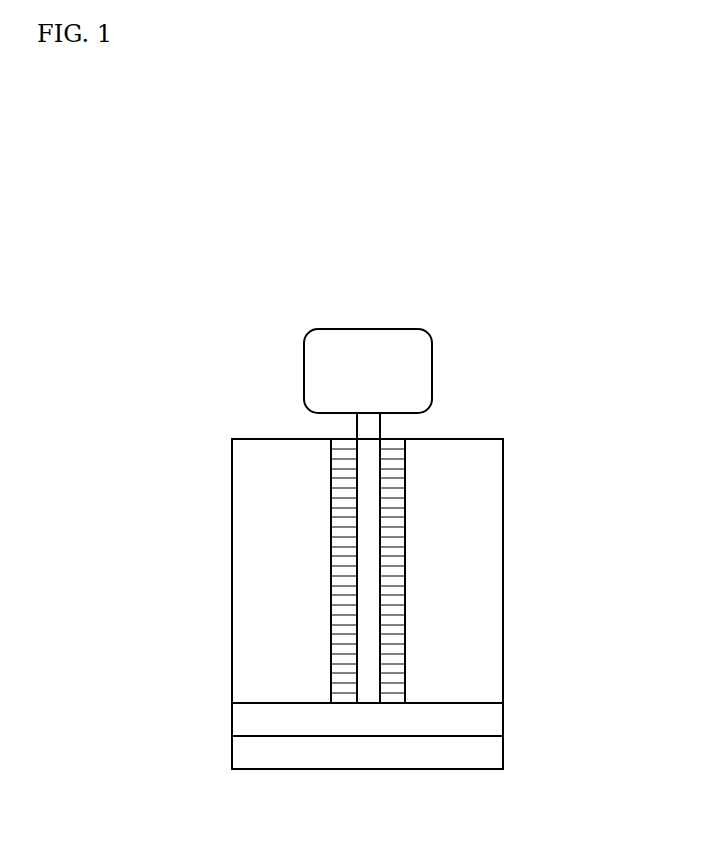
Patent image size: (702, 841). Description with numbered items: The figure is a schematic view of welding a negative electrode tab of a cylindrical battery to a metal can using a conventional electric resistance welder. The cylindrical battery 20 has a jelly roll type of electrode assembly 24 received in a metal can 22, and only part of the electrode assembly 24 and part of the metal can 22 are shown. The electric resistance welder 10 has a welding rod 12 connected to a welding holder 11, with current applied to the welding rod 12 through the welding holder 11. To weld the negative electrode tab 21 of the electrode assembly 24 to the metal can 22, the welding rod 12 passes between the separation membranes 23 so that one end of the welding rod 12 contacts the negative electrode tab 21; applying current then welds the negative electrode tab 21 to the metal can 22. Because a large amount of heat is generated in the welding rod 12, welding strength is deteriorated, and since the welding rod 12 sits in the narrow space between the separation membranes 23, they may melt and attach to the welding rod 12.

The electric resistance welder 10 is at (335, 313).
The welding holder 11 is at (398, 340).
The welding rod 12 is at (367, 428).
The cylindrical battery 20 is at (228, 513).
The negative electrode tab 21 is at (496, 719).
The metal can 22 is at (500, 756).
The separation membrane 23 is at (338, 454).
The electrode assembly 24 is at (253, 660).